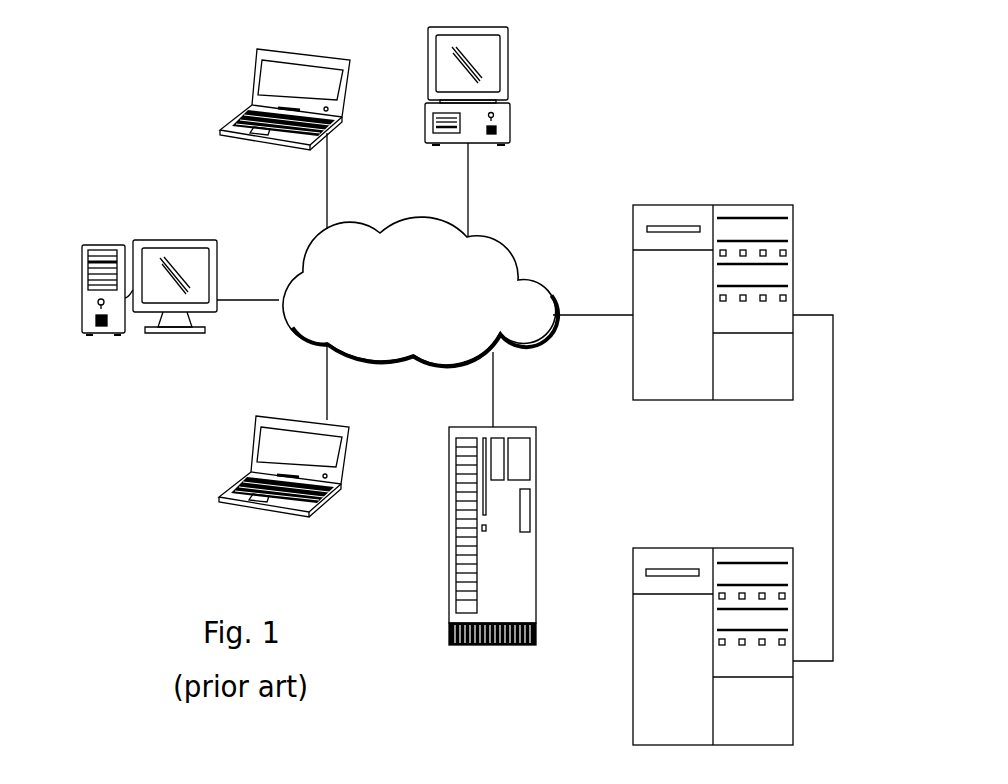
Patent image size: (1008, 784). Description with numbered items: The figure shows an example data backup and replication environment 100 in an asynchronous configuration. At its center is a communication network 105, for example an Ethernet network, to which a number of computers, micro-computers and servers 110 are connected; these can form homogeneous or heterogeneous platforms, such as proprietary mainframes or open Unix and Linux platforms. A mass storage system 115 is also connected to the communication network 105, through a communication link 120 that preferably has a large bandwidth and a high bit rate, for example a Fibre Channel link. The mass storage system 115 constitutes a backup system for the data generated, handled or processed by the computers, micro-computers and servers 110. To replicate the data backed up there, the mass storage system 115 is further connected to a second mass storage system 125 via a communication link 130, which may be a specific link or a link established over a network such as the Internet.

The environment 100 is at (652, 93).
The communication network 105 is at (418, 297).
The computers, micro-computers and servers 110 is at (256, 68).
The mass storage system 115 is at (748, 205).
The communication link 120 is at (596, 314).
The second mass storage system 125 is at (633, 715).
The communication link 130 is at (833, 458).